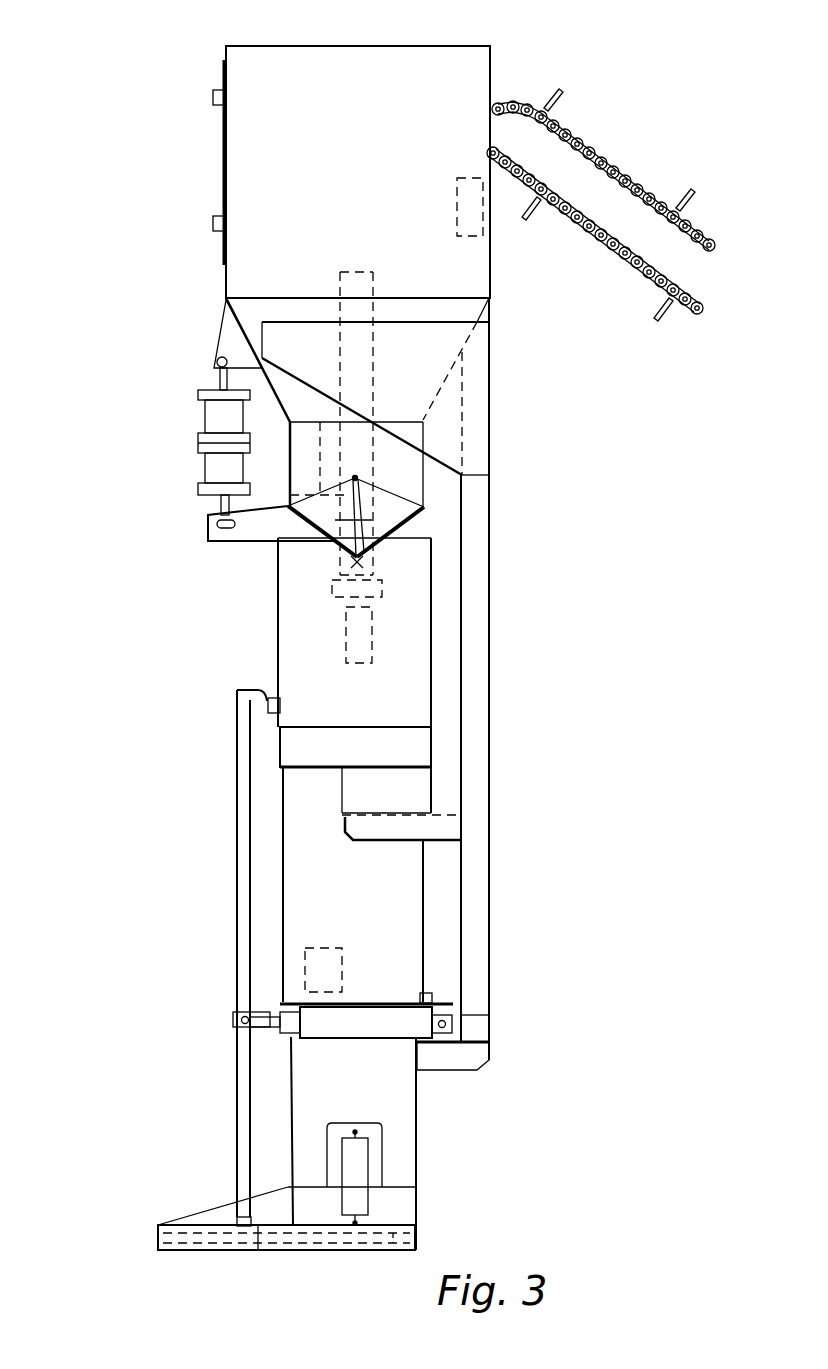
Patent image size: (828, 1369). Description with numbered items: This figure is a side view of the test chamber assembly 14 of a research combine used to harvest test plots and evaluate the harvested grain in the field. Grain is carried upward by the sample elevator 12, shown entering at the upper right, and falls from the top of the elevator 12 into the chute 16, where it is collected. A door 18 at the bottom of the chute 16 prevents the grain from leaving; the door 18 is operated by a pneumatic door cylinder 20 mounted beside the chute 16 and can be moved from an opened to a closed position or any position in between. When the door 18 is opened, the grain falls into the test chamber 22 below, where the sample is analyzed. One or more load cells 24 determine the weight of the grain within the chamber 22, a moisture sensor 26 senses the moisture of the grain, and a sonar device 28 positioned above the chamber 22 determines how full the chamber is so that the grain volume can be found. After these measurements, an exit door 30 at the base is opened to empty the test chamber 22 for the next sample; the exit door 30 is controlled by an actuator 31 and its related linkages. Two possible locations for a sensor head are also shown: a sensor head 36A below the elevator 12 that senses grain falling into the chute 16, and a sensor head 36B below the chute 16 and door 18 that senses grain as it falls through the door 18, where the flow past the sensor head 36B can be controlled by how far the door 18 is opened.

The sample elevator 12 is at (580, 140).
The test chamber assembly 14 is at (120, 82).
The chute 16 is at (395, 48).
The door 18 is at (333, 548).
The pneumatic door cylinder 20 is at (203, 470).
The test chamber 22 is at (415, 585).
The load cell 24 is at (405, 790).
The moisture sensor 26 is at (335, 947).
The sonar device 28 is at (333, 584).
The exit door 30 is at (315, 1243).
The actuator 31 is at (372, 1027).
The sensor head 36A is at (457, 192).
The sensor head 36B is at (367, 637).